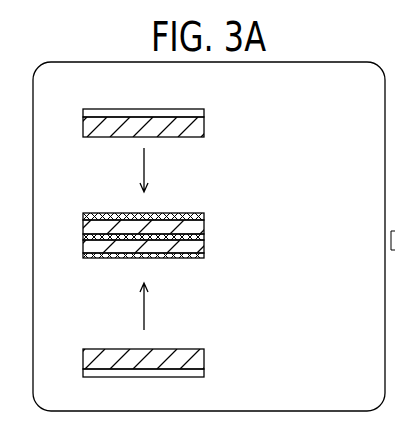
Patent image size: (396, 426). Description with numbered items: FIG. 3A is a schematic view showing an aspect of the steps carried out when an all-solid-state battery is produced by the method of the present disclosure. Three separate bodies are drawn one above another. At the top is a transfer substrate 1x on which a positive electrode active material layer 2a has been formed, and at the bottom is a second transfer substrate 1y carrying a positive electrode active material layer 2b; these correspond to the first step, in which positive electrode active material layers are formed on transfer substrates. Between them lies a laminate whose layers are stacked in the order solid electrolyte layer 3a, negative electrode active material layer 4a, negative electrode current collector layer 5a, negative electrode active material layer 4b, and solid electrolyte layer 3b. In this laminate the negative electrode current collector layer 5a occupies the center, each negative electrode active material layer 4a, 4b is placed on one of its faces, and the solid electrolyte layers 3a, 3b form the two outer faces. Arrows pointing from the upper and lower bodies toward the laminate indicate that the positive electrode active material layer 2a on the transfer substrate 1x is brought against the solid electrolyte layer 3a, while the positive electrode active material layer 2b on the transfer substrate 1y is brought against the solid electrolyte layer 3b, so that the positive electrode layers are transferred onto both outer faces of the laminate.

The transfer substrate 1x is at (204, 111).
The transfer substrate 1y is at (204, 372).
The positive electrode active material layer 2a is at (197, 127).
The positive electrode active material layer 2b is at (200, 353).
The solid electrolyte layer 3a is at (204, 214).
The solid electrolyte layer 3b is at (204, 258).
The negative electrode active material layer 4a is at (193, 228).
The negative electrode active material layer 4b is at (193, 243).
The negative electrode current collector layer 5a is at (200, 236).